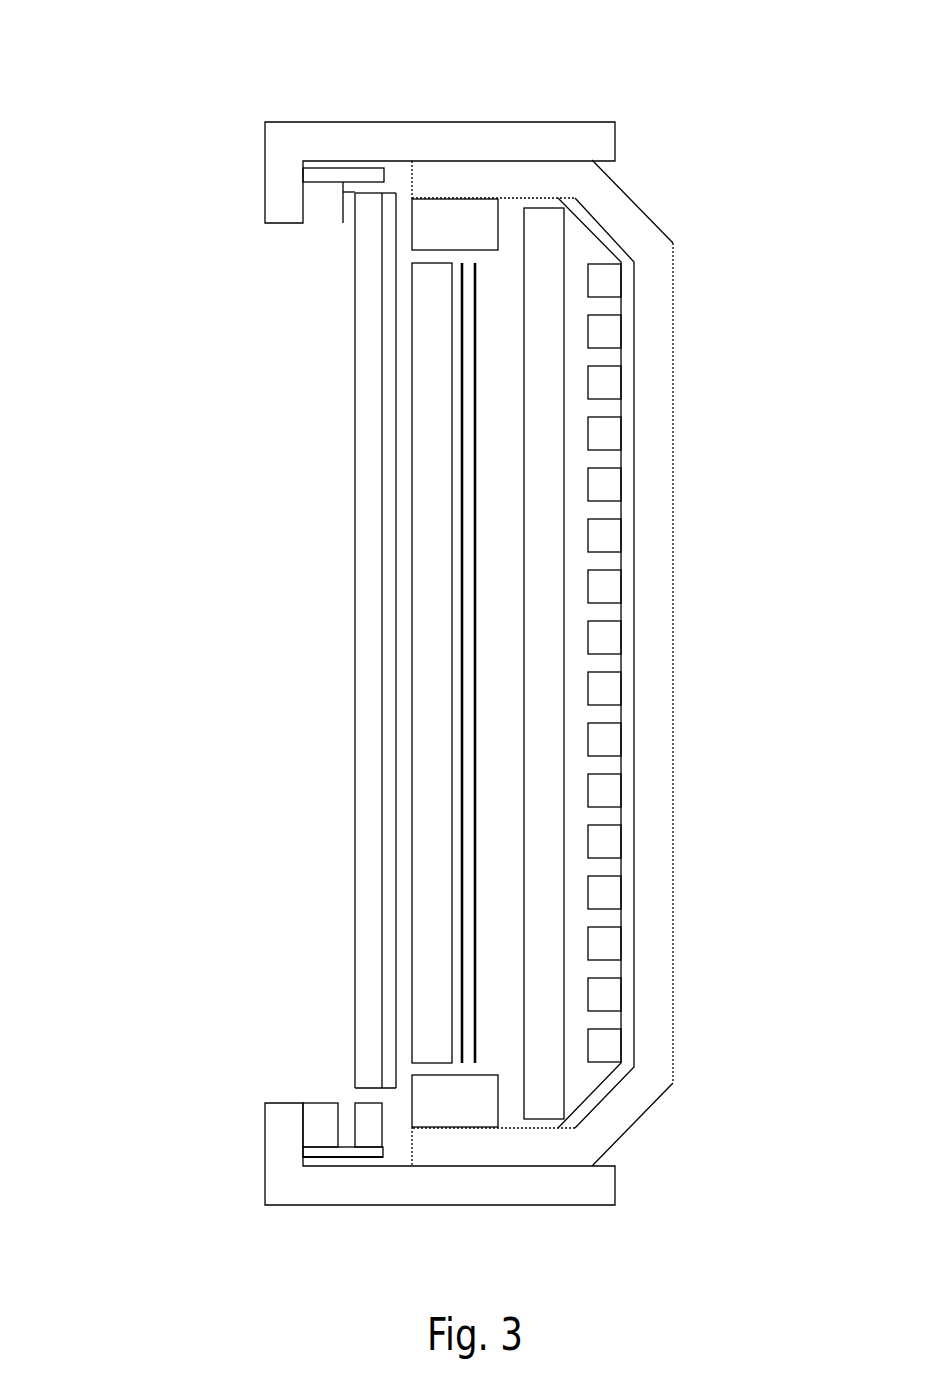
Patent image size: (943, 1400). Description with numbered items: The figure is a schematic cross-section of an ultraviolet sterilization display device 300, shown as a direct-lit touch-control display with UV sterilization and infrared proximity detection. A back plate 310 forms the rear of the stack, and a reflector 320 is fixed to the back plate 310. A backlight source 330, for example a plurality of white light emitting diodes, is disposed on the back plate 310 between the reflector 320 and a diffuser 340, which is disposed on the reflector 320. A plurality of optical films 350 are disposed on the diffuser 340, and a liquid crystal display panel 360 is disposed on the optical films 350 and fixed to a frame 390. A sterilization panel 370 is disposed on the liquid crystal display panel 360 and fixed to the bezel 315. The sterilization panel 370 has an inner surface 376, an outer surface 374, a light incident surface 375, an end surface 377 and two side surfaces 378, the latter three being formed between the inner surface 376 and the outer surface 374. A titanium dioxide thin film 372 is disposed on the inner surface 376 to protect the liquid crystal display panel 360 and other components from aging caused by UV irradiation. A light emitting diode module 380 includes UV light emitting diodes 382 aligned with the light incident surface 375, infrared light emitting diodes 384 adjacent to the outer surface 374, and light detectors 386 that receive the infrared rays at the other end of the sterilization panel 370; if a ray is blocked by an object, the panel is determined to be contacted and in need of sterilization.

The ultraviolet sterilization display device 300 is at (172, 65).
The back plate 310 is at (653, 420).
The bezel 315 is at (283, 185).
The reflector 320 is at (590, 222).
The backlight source 330 is at (605, 535).
The diffuser 340 is at (545, 697).
The optical films 350 is at (468, 268).
The liquid crystal display panel 360 is at (423, 467).
The sterilization panel 370 is at (323, 646).
The titanium dioxide thin film 372 is at (388, 555).
The outer surface 374 is at (355, 820).
The light incident surface 375 is at (366, 1092).
The inner surface 376 is at (382, 852).
The end surface 377 is at (348, 192).
The side surfaces 378 is at (370, 890).
The light emitting diode module 380 is at (347, 1198).
The UV light emitting diodes 382 is at (368, 1137).
The infrared light emitting diodes 384 is at (313, 1137).
The light detectors 386 is at (318, 190).
The frame 390 is at (432, 218).